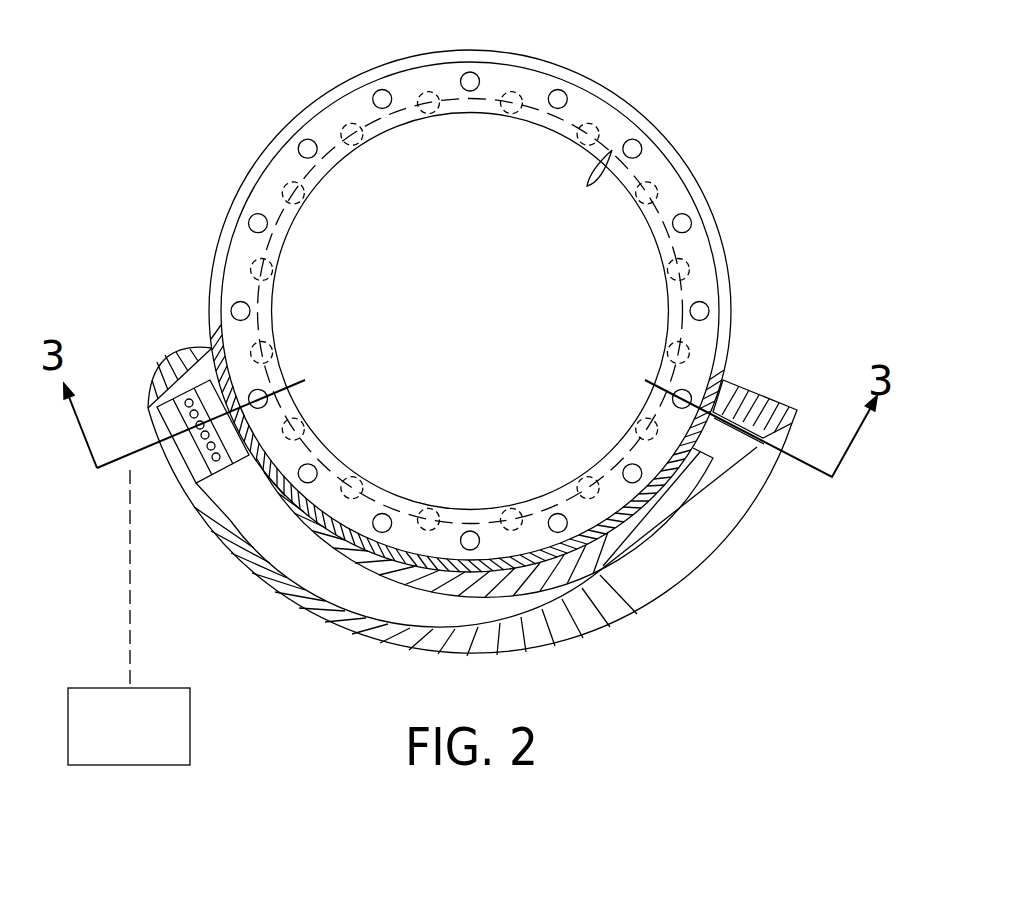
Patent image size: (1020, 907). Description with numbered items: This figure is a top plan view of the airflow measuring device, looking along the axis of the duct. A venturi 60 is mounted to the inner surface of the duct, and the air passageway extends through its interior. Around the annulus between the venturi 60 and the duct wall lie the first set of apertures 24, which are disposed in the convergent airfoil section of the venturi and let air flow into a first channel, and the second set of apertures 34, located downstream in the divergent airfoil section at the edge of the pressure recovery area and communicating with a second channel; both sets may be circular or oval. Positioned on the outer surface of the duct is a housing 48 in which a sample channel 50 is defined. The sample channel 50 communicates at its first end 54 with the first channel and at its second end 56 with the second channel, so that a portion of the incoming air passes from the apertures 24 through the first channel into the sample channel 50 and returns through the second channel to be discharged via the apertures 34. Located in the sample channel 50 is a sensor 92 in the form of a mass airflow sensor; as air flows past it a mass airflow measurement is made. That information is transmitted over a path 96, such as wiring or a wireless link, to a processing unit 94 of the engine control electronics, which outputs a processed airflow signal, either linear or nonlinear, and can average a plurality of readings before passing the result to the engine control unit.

The apertures 24 is at (383, 90).
The apertures 34 is at (270, 274).
The housing 48 is at (683, 580).
The sample channel 50 is at (315, 568).
The first end 54 is at (762, 384).
The second end 56 is at (176, 353).
The venturi 60 is at (604, 152).
The sensor 92 is at (190, 476).
The processing unit 94 is at (191, 727).
The path 96 is at (132, 600).